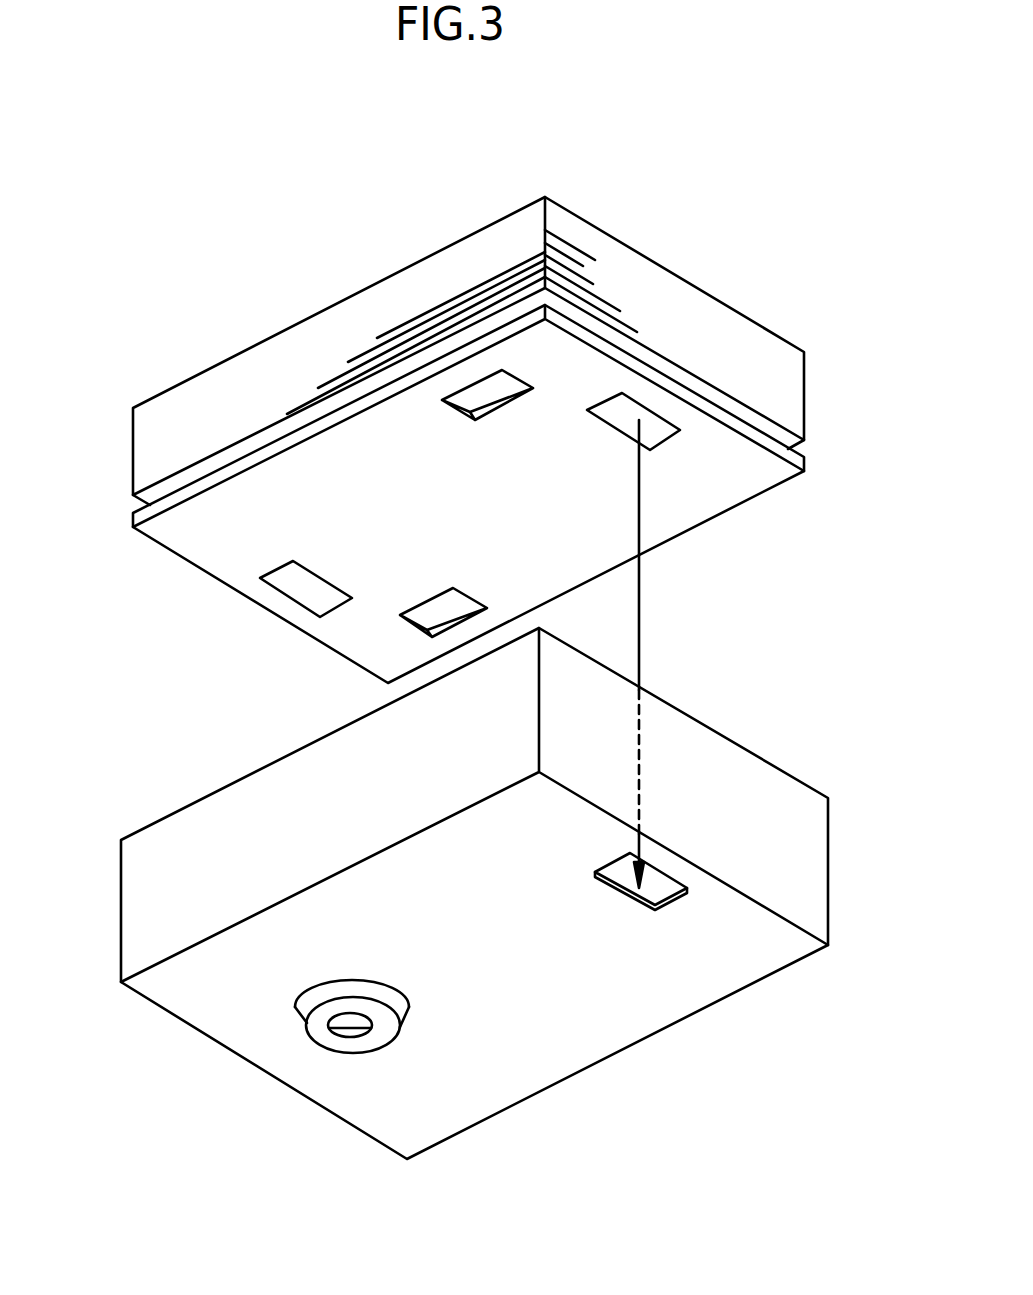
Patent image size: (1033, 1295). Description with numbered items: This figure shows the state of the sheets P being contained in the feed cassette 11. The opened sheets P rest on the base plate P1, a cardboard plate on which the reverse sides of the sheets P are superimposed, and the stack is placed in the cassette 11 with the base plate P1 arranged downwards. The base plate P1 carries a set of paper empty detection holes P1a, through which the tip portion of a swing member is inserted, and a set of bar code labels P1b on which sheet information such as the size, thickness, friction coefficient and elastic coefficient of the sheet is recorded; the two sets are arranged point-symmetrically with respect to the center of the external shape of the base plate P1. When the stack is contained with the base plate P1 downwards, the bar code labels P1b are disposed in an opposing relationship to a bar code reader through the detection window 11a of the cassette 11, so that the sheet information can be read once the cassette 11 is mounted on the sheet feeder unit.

The sheets P is at (768, 355).
The base plate P1 is at (727, 500).
The paper empty detection holes P1a is at (463, 408).
The bar code labels P1b is at (650, 410).
The cassette 11 is at (732, 738).
The detection window 11a is at (655, 885).